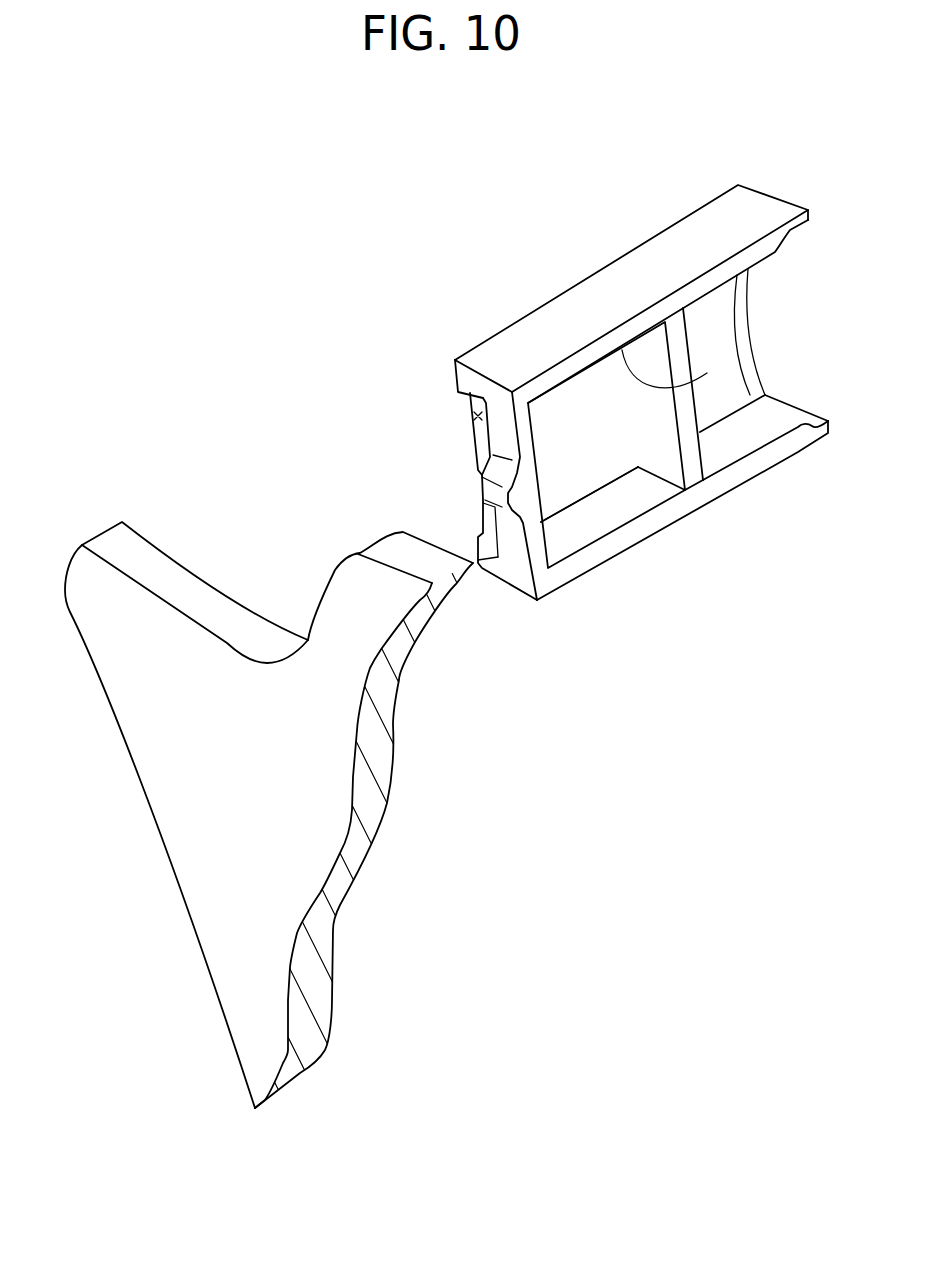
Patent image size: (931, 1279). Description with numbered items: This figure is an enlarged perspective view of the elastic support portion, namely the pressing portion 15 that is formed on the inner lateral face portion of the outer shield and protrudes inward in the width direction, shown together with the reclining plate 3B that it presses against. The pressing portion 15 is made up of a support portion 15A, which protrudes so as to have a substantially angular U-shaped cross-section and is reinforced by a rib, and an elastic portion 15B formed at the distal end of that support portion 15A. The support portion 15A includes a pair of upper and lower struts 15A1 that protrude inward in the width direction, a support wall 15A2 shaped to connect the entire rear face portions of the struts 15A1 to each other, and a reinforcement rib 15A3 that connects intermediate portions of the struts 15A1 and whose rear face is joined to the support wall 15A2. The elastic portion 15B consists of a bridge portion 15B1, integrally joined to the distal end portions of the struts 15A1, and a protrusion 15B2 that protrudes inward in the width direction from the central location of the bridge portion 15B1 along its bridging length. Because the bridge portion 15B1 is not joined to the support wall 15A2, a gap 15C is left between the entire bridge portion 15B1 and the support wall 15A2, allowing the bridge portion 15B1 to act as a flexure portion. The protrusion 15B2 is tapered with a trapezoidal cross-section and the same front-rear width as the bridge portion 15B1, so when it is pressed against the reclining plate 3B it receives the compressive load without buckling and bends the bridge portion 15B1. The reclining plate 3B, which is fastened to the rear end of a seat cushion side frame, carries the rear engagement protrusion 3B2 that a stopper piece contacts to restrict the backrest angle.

The pressing portion 15 is at (518, 352).
The support portion 15A is at (702, 148).
The struts 15A1 is at (735, 437).
The support wall 15A2 is at (638, 467).
The reinforcement rib 15A3 is at (645, 372).
The elastic portion 15B is at (362, 433).
The bridge portion 15B1 is at (502, 435).
The protrusion 15B2 is at (490, 495).
The gap 15C is at (475, 415).
The reclining plate 3B is at (228, 593).
The rear engagement protrusion 3B2 is at (95, 598).